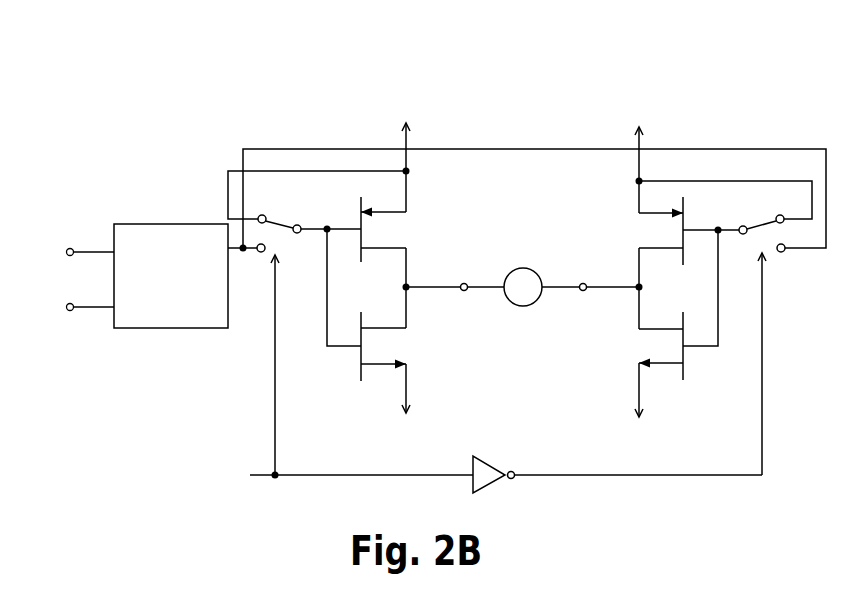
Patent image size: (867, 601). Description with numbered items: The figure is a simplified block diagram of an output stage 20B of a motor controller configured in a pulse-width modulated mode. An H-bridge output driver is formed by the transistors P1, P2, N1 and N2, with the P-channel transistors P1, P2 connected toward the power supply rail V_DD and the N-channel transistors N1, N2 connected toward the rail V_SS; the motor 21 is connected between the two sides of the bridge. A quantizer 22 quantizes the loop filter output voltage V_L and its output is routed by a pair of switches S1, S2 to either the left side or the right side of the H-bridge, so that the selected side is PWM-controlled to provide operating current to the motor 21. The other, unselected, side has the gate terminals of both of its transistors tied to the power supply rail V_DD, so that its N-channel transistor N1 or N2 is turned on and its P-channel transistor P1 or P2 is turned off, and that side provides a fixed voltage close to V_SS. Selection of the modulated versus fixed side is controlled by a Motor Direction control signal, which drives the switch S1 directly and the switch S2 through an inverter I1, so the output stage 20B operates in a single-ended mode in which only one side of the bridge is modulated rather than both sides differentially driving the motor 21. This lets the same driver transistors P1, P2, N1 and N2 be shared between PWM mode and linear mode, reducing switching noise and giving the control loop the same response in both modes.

The output stage 20B is at (528, 78).
The motor 21 is at (523, 268).
The quantizer 22 is at (159, 300).
The inverter I1 is at (489, 463).
The first switch S1 is at (309, 221).
The second switch S2 is at (734, 221).
The P-channel transistor P1 is at (379, 253).
The P-channel transistor P2 is at (661, 259).
The N-channel transistor N1 is at (366, 305).
The N-channel transistor N2 is at (678, 305).